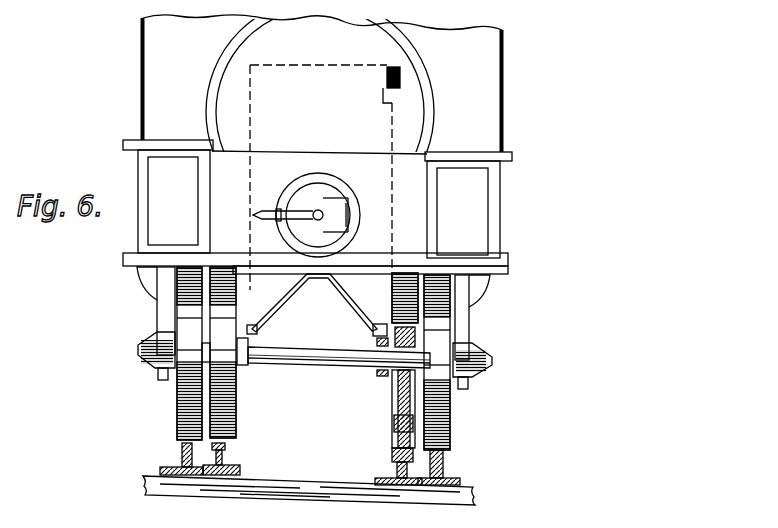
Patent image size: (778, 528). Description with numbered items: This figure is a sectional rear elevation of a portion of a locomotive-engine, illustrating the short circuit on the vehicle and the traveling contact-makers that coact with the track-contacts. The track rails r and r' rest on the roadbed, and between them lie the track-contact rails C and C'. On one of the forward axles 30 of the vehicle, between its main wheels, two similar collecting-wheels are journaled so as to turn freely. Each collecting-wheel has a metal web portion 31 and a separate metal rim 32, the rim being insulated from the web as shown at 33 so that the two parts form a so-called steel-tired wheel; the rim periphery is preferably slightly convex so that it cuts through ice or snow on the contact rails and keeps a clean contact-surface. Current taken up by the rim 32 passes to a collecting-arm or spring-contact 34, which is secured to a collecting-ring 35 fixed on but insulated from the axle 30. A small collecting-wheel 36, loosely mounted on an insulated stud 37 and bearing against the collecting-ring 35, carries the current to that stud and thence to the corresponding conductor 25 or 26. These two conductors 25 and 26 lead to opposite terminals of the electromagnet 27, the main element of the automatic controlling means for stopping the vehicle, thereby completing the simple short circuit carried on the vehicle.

The conductor 25 is at (392, 193).
The conductor 26 is at (249, 194).
The electromagnet 27 is at (387, 78).
The axle 30 is at (300, 365).
The web portion 31 is at (396, 398).
The rim 32 is at (392, 455).
The insulation 33 is at (394, 428).
The collecting-arm 34 is at (391, 298).
The collecting-ring 35 is at (377, 374).
The small collecting-wheel 36 is at (376, 332).
The insulated stud 37 is at (351, 309).
The rail r is at (175, 459).
The track-contact rail C is at (228, 459).
The track-contact rail C' is at (388, 470).
The rail r' is at (447, 467).